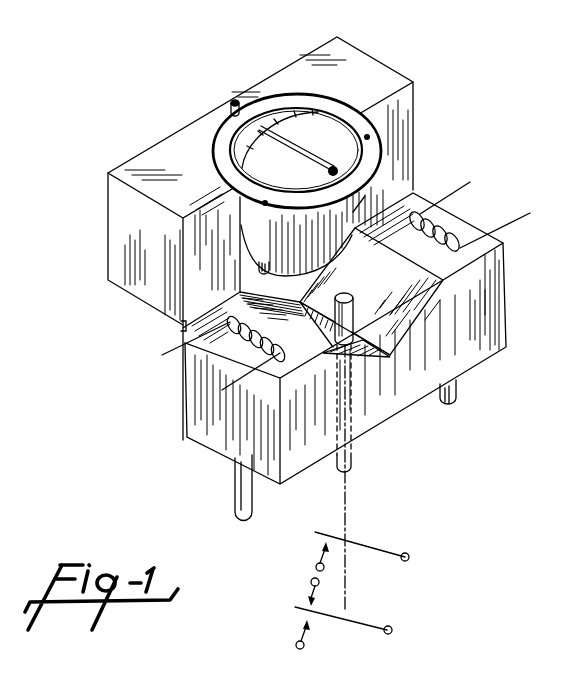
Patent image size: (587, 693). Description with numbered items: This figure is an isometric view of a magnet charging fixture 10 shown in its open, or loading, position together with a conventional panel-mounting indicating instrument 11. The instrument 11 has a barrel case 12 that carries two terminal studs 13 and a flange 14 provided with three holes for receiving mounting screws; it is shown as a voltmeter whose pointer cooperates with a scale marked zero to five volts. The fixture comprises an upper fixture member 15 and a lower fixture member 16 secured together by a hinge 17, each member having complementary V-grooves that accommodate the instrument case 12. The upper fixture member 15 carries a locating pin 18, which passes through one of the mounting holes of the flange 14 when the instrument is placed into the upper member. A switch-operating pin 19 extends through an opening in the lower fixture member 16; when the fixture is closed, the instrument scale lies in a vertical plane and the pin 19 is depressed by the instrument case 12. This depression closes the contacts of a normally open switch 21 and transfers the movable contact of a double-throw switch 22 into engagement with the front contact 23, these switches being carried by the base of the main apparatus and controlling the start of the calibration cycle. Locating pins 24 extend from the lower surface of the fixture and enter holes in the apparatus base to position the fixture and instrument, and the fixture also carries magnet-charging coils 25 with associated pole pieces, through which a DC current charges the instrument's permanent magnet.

The fixture 10 is at (100, 200).
The indicating instrument 11 is at (352, 97).
The barrel case 12 is at (337, 245).
The terminal studs 13 is at (258, 274).
The flange 14 is at (222, 149).
The upper fixture member 15 is at (118, 243).
The lower fixture member 16 is at (187, 399).
The hinge 17 is at (177, 327).
The locating pin 18 is at (235, 100).
The switch-operating pin 19 is at (357, 454).
The normally open switch 21 is at (298, 558).
The double-throw switch 22 is at (282, 622).
The front contact 23 is at (307, 637).
The locating pins 24 is at (236, 500).
The magnet-charging coils 25 is at (242, 354).